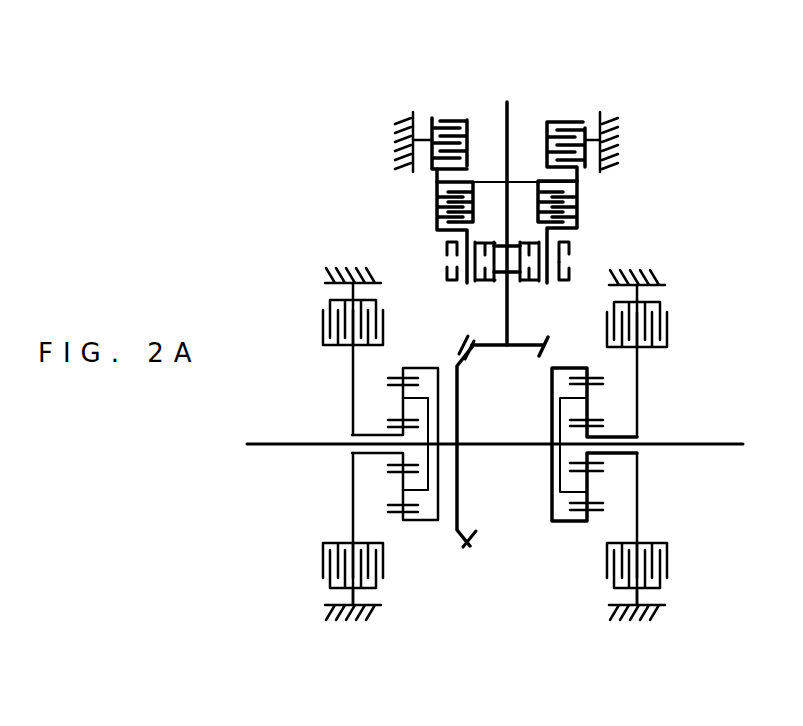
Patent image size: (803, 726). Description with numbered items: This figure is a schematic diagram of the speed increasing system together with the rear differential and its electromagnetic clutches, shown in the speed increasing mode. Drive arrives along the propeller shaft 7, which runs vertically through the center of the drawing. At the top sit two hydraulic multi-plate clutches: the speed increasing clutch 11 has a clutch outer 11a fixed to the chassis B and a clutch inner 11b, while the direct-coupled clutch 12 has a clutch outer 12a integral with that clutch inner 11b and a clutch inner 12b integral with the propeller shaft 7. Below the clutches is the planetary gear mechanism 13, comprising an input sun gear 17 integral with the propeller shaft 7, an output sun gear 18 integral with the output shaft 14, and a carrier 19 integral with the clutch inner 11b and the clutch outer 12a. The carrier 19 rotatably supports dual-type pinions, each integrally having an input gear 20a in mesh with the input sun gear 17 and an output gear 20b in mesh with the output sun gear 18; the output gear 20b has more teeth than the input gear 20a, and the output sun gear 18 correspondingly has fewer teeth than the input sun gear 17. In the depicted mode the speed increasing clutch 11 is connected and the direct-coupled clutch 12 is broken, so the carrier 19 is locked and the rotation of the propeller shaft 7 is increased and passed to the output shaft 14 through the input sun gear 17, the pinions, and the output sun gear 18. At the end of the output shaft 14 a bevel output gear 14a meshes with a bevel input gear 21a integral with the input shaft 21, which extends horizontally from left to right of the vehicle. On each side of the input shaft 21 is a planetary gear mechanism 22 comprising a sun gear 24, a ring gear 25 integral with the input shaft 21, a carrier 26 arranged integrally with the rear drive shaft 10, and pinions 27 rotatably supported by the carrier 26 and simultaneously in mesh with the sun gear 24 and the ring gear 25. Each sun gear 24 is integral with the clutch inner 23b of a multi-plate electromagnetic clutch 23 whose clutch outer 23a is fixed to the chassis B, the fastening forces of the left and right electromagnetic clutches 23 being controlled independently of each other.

The propeller shaft 7 is at (511, 118).
The rear drive shaft 10 is at (268, 444).
The speed increasing clutch 11 is at (569, 110).
The clutch outer 11a is at (441, 118).
The clutch inner 11b is at (462, 121).
The chassis B is at (615, 113).
The direct-coupled clutch 12 is at (592, 191).
The clutch outer 12a is at (437, 181).
The clutch inner 12b is at (440, 226).
The planetary gear mechanism 13 is at (434, 282).
The output shaft 14 is at (512, 330).
The output gear 14a is at (470, 362).
The input sun gear 17 is at (524, 245).
The output sun gear 18 is at (493, 280).
The carrier 19 is at (450, 243).
The input gear 20a is at (568, 242).
The output gear 20b is at (569, 280).
The input shaft 21 is at (500, 447).
The input gear 21a is at (478, 541).
The planetary gear mechanism 22 is at (424, 548).
The electromagnetic clutch 23 is at (297, 625).
The clutch outer 23a is at (666, 586).
The clutch inner 23b is at (672, 556).
The sun gear 24 is at (603, 463).
The ring gear 25 is at (597, 516).
The carrier 26 is at (578, 405).
The pinion 27 is at (598, 475).